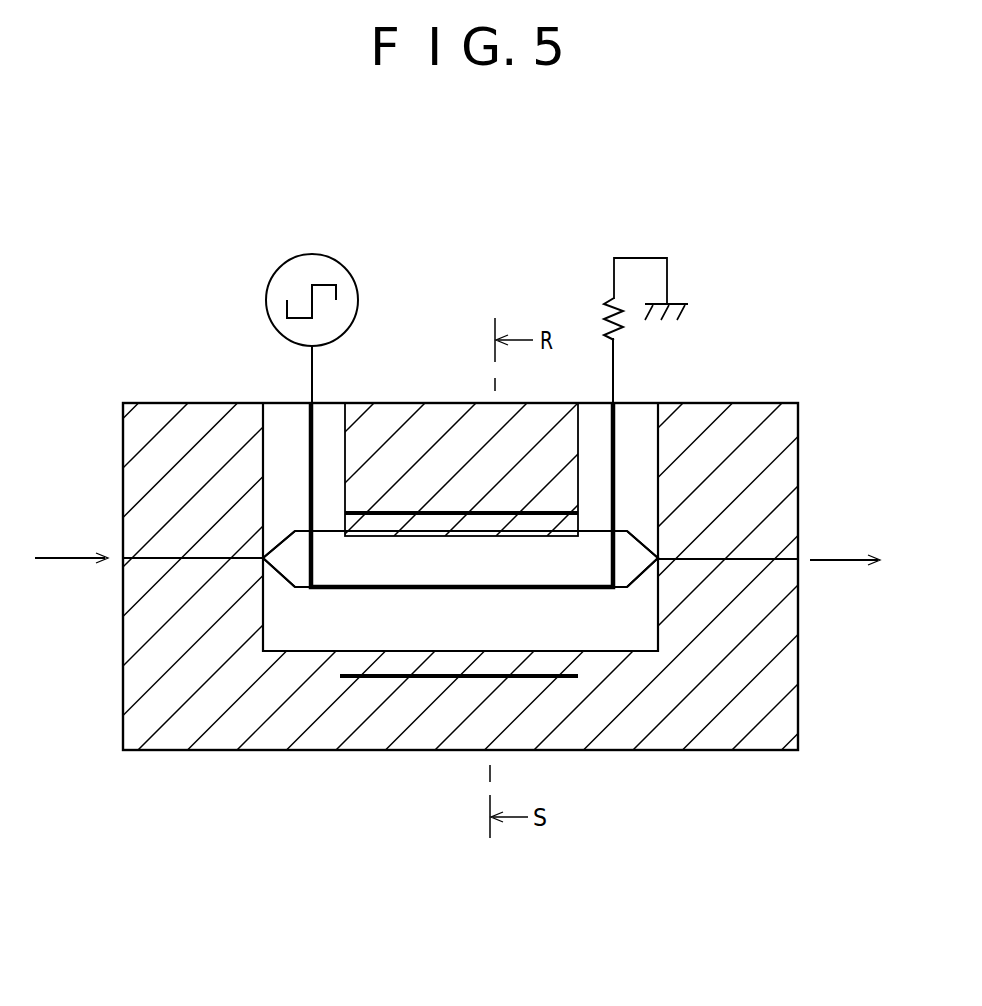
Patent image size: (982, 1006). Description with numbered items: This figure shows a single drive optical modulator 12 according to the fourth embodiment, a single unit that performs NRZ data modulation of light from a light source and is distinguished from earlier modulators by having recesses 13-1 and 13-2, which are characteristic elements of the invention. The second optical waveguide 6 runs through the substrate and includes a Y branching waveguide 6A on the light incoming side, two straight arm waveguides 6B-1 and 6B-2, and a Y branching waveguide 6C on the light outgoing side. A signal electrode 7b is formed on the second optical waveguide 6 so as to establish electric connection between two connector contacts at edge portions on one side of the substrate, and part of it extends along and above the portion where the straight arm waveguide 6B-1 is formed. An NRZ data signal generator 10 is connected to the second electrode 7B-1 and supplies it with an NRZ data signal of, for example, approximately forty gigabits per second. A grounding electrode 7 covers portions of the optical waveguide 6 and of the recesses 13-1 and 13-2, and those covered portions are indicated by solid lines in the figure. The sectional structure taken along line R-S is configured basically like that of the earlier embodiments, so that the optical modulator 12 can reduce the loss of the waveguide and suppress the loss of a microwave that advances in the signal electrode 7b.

The single drive optical modulator 12 is at (178, 768).
The grounding electrode 7 is at (407, 408).
The second optical waveguide 6 is at (280, 528).
The signal electrode 7b is at (380, 588).
The second electrode 7B-1 is at (614, 448).
The NRZ data signal generator 10 is at (266, 299).
The recess 13-2 is at (440, 515).
The recess 13-1 is at (464, 676).
The Y branching waveguide 6A is at (280, 577).
The straight arm waveguide 6B-2 is at (598, 533).
The straight arm waveguide 6B-1 is at (618, 594).
The Y branching waveguide 6C is at (647, 582).